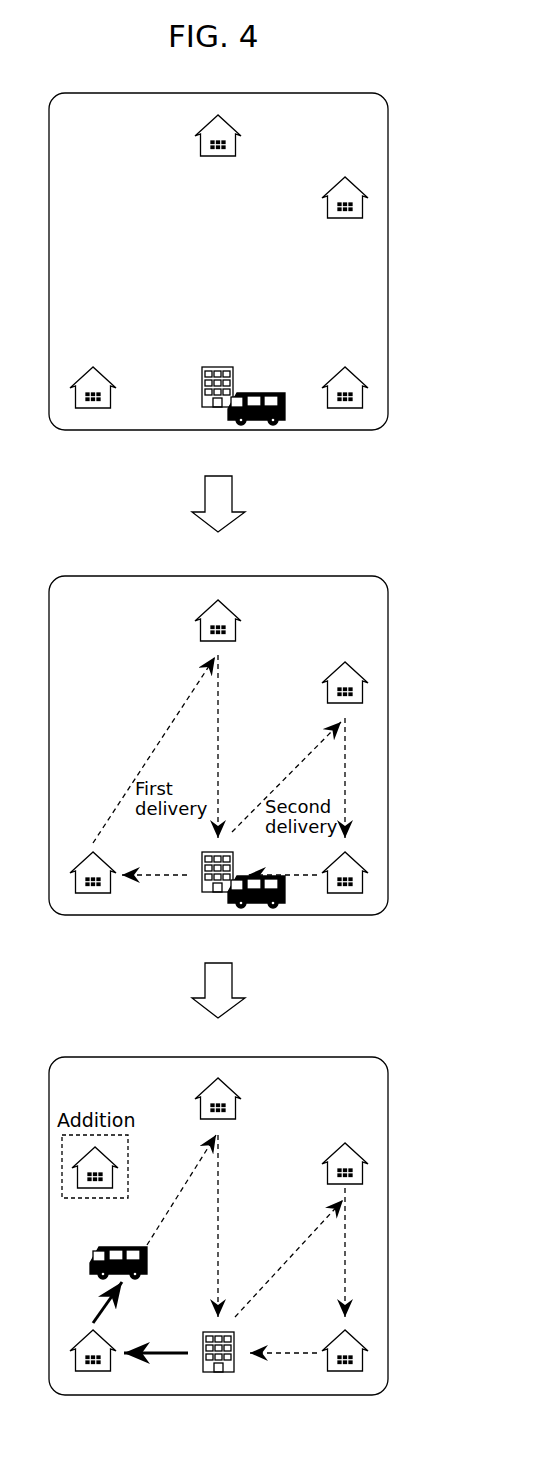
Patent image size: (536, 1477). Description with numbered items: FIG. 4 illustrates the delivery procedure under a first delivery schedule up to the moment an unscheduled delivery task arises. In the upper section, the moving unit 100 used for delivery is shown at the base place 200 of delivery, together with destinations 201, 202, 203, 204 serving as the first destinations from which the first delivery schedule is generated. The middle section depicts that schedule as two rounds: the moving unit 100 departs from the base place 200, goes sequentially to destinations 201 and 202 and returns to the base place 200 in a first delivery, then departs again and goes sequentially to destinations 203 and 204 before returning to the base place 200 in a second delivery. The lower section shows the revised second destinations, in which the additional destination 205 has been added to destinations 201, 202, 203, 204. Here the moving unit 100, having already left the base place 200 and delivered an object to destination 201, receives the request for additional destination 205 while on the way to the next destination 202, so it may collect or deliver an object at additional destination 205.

The moving unit 100 is at (290, 376).
The base place 200 is at (233, 350).
The destination 201 is at (125, 354).
The destination 202 is at (228, 122).
The destination 203 is at (344, 176).
The destination 204 is at (345, 366).
The additional destination 205 is at (110, 1152).